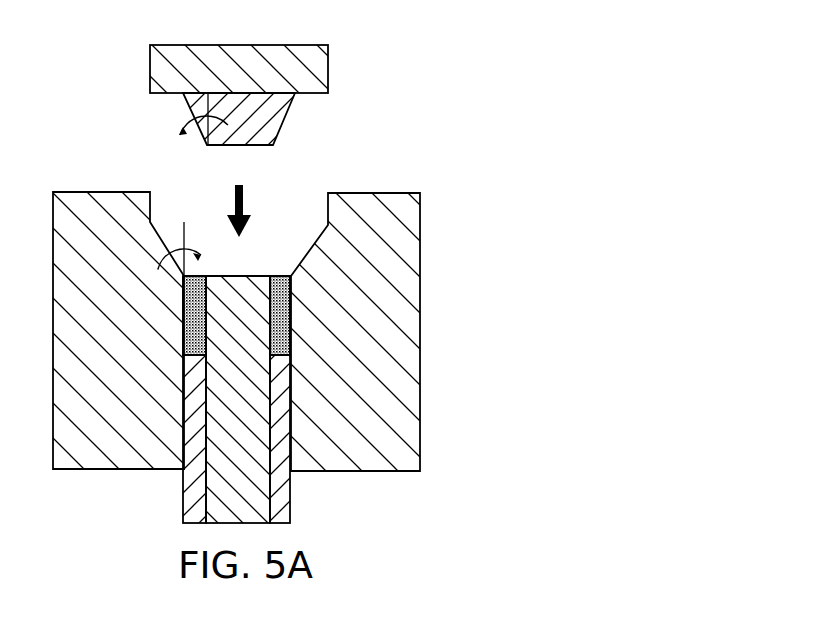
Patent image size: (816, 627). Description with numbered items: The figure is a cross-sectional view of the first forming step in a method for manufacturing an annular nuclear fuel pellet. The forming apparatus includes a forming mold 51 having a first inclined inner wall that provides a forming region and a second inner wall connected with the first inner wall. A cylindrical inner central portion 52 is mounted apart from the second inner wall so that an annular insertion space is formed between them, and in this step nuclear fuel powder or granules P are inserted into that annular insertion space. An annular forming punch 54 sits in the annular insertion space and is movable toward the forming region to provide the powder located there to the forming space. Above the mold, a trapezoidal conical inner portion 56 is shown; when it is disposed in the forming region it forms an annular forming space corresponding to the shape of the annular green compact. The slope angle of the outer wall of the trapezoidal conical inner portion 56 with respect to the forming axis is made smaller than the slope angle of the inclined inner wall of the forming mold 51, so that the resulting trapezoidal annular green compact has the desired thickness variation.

The trapezoidal conical inner portion 56 is at (328, 70).
The forming mold 51 is at (420, 341).
The cylindrical inner central portion 52 is at (213, 515).
The annular forming punch 54 is at (283, 515).
The nuclear fuel powder or granules P is at (287, 296).